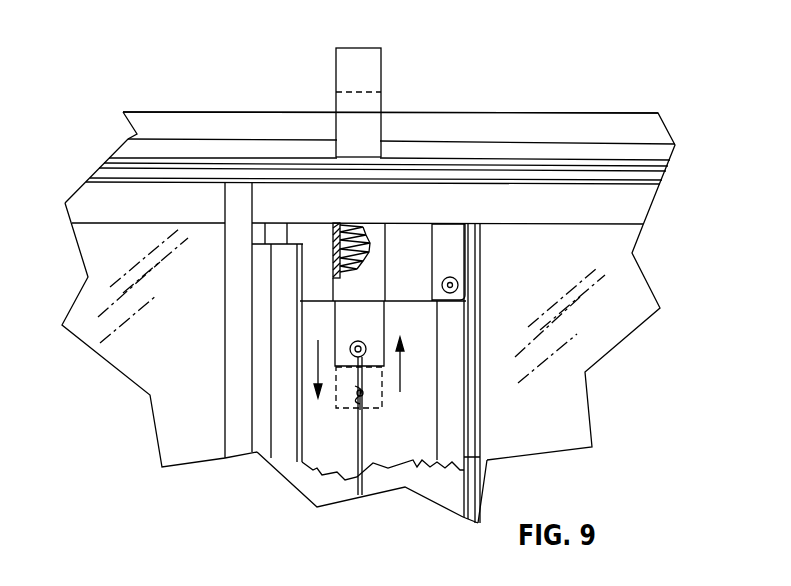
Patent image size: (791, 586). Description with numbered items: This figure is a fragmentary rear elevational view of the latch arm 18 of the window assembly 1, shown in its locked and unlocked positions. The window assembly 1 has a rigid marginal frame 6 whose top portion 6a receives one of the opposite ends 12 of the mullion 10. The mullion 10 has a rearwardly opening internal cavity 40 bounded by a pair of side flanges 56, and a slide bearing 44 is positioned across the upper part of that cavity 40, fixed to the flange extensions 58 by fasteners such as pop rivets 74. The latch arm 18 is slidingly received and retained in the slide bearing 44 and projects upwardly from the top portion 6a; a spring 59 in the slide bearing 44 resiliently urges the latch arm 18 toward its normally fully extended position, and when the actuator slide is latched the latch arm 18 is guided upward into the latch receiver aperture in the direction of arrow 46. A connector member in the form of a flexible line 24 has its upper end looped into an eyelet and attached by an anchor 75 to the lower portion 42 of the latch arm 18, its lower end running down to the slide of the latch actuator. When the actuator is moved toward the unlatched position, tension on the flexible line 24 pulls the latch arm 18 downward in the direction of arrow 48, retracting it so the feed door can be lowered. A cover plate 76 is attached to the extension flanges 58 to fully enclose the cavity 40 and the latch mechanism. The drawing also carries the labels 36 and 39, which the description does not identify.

The window assembly 1 is at (649, 91).
The rigid marginal frame 6 is at (684, 153).
The top portion 6a is at (128, 155).
The mullion 10 is at (487, 462).
The opposite ends 12 is at (482, 240).
The latch arm 18 is at (362, 48).
The flexible line 24 is at (357, 472).
The side panel 36 is at (132, 345).
The guide wall 39 is at (408, 290).
The internal cavity 40 is at (420, 335).
The lower portion 42 is at (368, 360).
The slide bearing 44 is at (377, 247).
The arrow 46 is at (400, 372).
The arrow 48 is at (318, 348).
The side flanges 56 is at (478, 443).
The flange extensions 58 is at (287, 460).
The spring 59 is at (334, 242).
The pop rivets 74 is at (441, 278).
The anchors 75 is at (356, 342).
The cover plate 76 is at (340, 497).